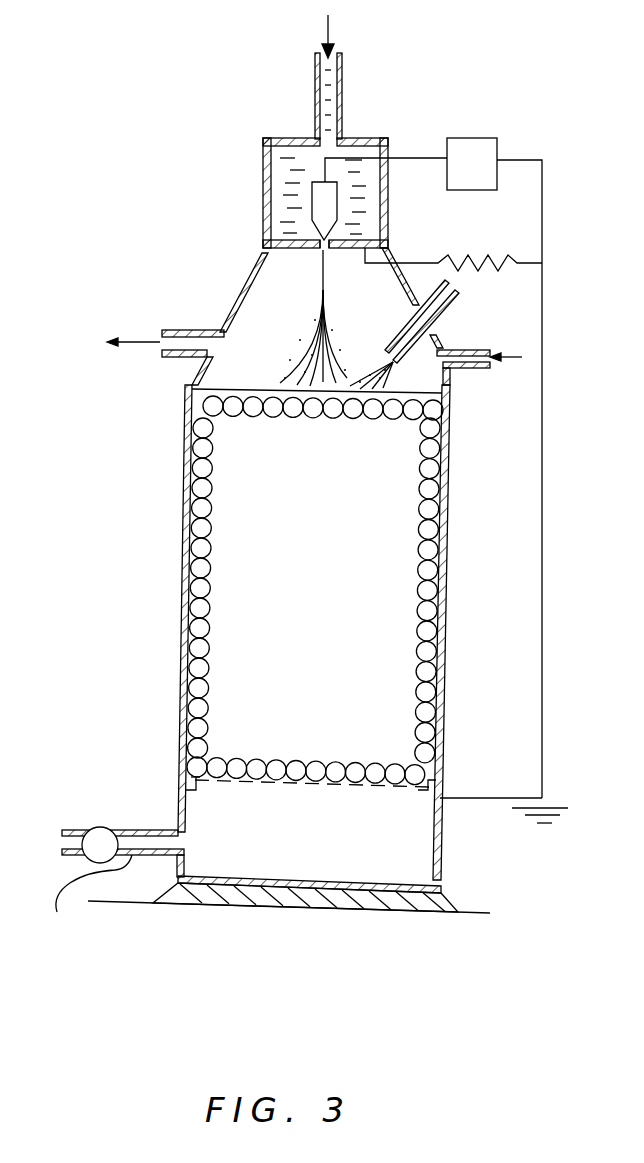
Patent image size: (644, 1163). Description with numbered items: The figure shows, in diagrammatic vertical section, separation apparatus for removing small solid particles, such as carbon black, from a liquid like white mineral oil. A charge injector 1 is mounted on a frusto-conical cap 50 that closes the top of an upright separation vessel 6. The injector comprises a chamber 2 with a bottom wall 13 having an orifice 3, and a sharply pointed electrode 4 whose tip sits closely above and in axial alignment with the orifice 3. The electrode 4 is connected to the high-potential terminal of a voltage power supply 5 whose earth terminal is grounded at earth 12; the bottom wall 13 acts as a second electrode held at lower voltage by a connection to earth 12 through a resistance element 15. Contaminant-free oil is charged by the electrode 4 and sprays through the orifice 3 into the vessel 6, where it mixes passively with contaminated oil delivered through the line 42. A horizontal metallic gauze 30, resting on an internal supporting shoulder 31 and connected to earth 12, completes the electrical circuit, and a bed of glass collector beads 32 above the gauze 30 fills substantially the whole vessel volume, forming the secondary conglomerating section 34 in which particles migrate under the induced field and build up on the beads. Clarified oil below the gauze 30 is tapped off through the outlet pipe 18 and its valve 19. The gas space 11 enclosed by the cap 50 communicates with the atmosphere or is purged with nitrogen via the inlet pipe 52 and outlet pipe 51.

The charge injector 1 is at (252, 199).
The chamber 2 is at (262, 246).
The orifice 3 is at (325, 252).
The pointed electrode 4 is at (333, 210).
The voltage power supply 5 is at (489, 152).
The separation vessel 6 is at (182, 700).
The gas space 11 is at (270, 353).
The earth 12 is at (546, 808).
The bottom wall 13 is at (292, 250).
The resistance element 15 is at (476, 257).
The outlet pipe 18 is at (93, 892).
The valve 19 is at (96, 838).
The metallic gauze 30 is at (283, 784).
The internal supporting shoulder 31 is at (190, 783).
The collector beads 32 is at (196, 608).
The secondary conglomerating section 34 is at (442, 567).
The line 42 is at (428, 330).
The frusto-conical cap 50 is at (236, 295).
The outlet pipe 51 is at (165, 358).
The inlet pipe 52 is at (472, 372).